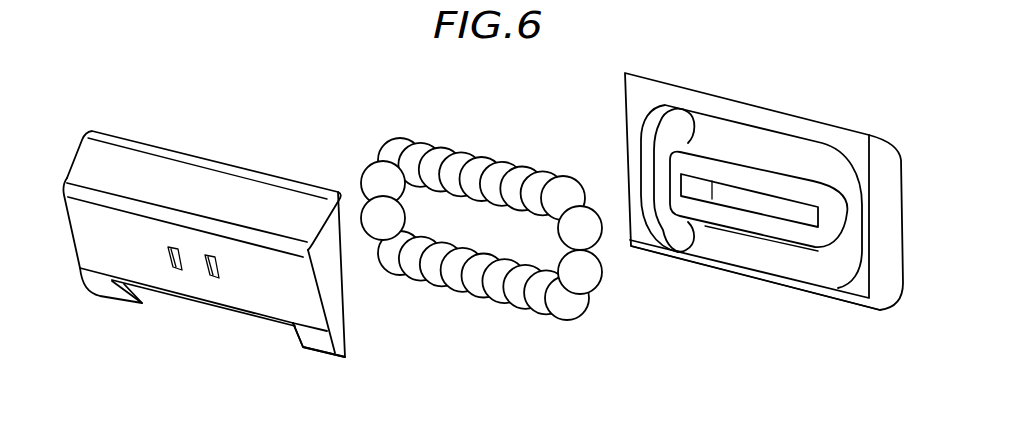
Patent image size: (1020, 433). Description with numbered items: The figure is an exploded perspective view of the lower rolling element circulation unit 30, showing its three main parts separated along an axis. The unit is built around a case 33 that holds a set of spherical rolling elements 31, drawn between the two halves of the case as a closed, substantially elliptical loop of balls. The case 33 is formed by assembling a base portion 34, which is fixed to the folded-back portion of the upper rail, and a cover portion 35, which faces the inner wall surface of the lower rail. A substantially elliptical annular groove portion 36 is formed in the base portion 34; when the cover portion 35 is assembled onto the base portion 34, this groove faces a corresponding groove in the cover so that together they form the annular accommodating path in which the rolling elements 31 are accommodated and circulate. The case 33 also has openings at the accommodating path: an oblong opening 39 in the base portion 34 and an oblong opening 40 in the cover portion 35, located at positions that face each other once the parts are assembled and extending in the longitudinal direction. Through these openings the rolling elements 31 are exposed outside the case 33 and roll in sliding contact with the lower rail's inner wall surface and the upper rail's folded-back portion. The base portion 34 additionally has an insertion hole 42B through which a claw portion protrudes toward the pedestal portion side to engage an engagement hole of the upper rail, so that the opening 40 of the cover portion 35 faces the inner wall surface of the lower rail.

The rolling element circulation unit 30 is at (875, 407).
The rolling elements 31 is at (483, 152).
The case 33 is at (758, 362).
The base portion 34 is at (700, 257).
The cover portion 35 is at (347, 343).
The groove portion 36 is at (800, 153).
The opening 39 is at (793, 248).
The opening 40 is at (197, 304).
The insertion hole 42B is at (737, 192).